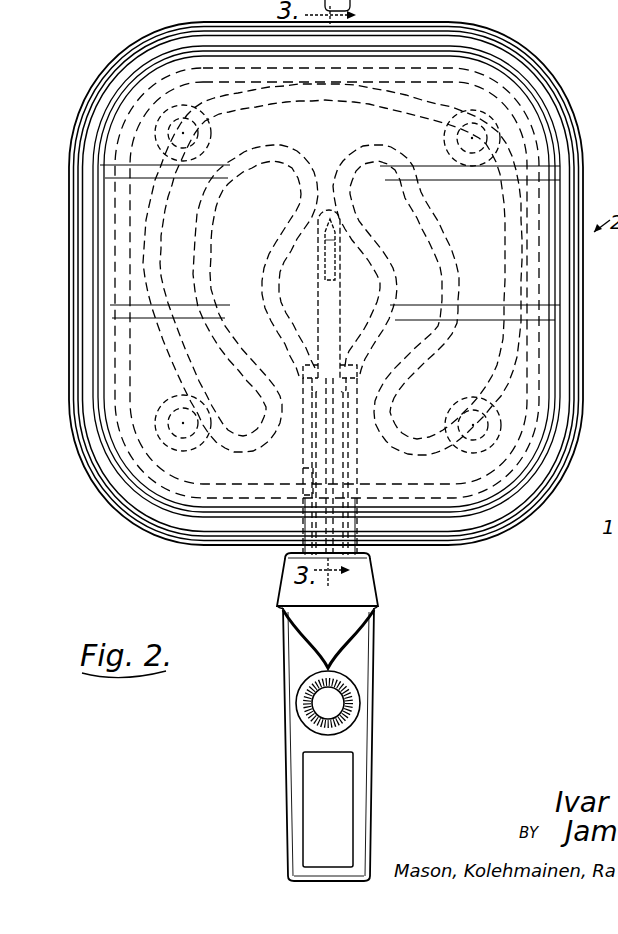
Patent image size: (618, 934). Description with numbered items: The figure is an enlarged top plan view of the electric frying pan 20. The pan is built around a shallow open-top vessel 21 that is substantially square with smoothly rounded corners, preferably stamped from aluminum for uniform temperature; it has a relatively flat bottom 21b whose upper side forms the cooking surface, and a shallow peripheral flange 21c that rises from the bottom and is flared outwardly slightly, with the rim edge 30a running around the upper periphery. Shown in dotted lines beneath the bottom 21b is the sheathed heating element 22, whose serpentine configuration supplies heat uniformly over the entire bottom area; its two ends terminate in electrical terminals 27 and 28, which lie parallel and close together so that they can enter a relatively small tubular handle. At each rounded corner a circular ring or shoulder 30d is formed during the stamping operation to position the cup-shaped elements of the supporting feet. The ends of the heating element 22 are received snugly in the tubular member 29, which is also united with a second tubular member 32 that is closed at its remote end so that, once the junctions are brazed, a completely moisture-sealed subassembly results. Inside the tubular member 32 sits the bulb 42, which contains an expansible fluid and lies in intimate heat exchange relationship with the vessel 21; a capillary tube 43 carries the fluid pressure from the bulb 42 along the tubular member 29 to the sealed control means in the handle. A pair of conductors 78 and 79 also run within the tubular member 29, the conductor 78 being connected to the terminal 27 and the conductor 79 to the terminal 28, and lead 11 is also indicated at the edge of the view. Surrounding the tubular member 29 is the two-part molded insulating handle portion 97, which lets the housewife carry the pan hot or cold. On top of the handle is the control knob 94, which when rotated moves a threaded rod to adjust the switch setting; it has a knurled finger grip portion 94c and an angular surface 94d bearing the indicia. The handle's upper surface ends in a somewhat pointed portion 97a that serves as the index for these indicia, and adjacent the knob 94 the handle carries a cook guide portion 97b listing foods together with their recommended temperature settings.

The lead 11 is at (600, 438).
The electric frying pan 20 is at (80, 471).
The vessel 21 is at (585, 153).
The bottom 21b is at (331, 137).
The peripheral flange 21c is at (92, 295).
The heating element 22 is at (500, 249).
The electrical terminal 27 is at (405, 356).
The electrical terminal 28 is at (295, 376).
The tubular member 29 is at (357, 551).
The rim 30a is at (568, 92).
The circular ring or shoulder 30d is at (194, 117).
The tubular member 32 is at (296, 221).
The bulb 42 is at (327, 283).
The capillary tube 43 is at (347, 456).
The conductor 78 is at (385, 417).
The conductor 79 is at (300, 475).
The knob 94 is at (297, 695).
The finger grip portion 94c is at (303, 720).
The angular surface 94d is at (358, 695).
The insulating handle portion 97 is at (367, 724).
The pointed portion 97a is at (333, 658).
The cook guide portion 97b is at (340, 775).